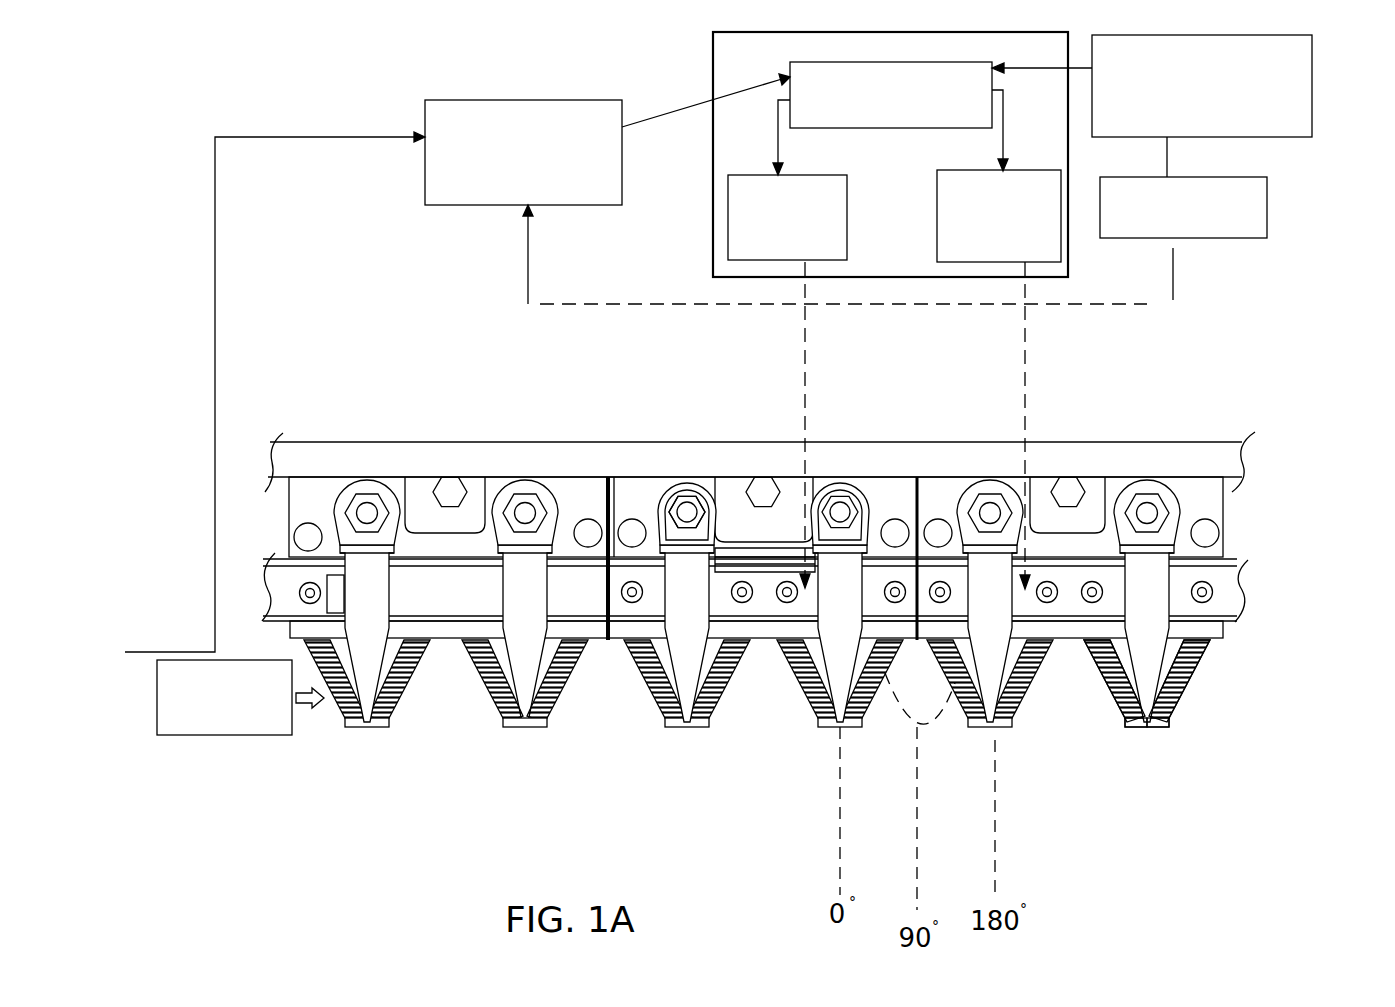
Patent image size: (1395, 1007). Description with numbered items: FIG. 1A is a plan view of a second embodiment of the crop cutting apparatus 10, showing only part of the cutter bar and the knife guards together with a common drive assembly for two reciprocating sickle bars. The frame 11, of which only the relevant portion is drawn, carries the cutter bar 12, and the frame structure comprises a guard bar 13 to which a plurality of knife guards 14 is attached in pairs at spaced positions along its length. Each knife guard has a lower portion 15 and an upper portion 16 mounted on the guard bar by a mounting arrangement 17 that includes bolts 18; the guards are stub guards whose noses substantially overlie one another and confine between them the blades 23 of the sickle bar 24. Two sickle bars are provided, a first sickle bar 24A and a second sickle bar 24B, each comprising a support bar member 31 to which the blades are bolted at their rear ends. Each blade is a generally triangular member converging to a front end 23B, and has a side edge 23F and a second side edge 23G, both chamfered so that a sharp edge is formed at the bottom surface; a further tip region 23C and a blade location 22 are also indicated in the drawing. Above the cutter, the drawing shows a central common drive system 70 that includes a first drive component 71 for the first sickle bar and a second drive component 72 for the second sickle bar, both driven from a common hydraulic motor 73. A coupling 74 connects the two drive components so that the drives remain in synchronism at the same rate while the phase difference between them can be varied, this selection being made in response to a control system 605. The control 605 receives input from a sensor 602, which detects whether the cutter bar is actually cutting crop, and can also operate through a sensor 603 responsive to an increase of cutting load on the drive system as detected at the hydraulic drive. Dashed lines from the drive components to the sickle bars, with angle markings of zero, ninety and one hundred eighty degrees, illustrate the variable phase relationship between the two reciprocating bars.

The crop cutting apparatus 10 is at (604, 698).
The frame 11 is at (583, 455).
The cutter bar 12 is at (468, 545).
The guard bar 13 is at (950, 460).
The knife guards 14 is at (534, 588).
The lower portion 15 is at (720, 741).
The upper portion 16 is at (683, 660).
The mounting arrangement 17 is at (712, 497).
The bolts 18 is at (687, 505).
The knife blade 22 is at (835, 722).
The blades 23 is at (1110, 688).
The front end 23B is at (1140, 722).
The guard tip portion 23C is at (1155, 722).
The side edge 23F is at (1188, 683).
The second side edge 23G is at (1122, 647).
The sickle bar 24 is at (611, 588).
The first sickle bar 24A is at (328, 578).
The second sickle bar 24B is at (1187, 583).
The support bar member 31 is at (1115, 587).
The central common drive system 70 is at (1068, 250).
The first drive component 71 is at (832, 227).
The second drive component 72 is at (950, 206).
The common hydraulic motor 73 is at (1297, 93).
The coupling 74 is at (880, 128).
The sensor 602 is at (238, 735).
The sensor 603 is at (1262, 212).
The control system 605 is at (462, 185).